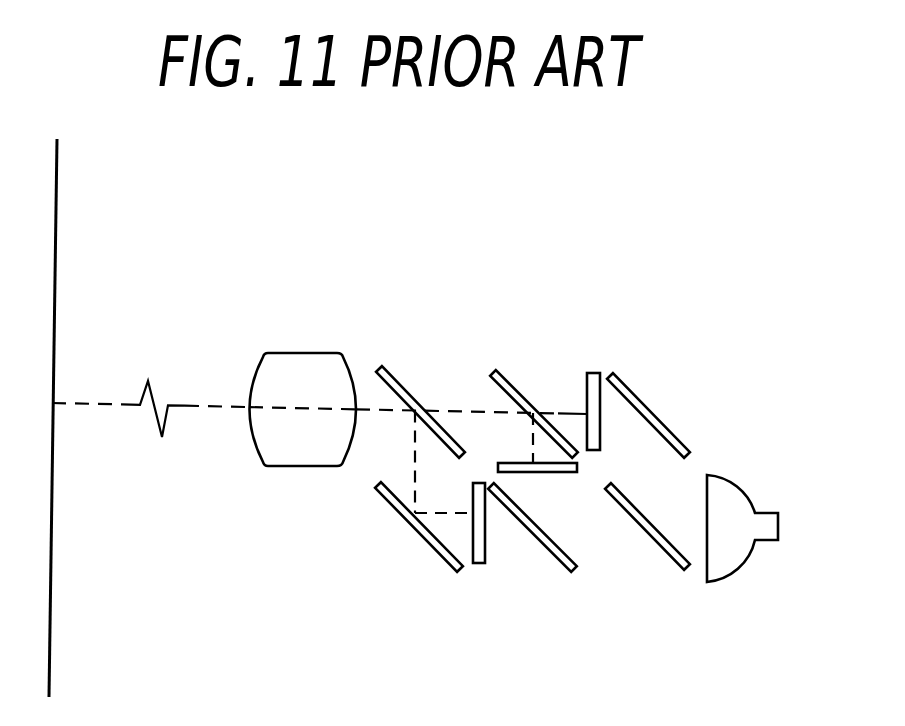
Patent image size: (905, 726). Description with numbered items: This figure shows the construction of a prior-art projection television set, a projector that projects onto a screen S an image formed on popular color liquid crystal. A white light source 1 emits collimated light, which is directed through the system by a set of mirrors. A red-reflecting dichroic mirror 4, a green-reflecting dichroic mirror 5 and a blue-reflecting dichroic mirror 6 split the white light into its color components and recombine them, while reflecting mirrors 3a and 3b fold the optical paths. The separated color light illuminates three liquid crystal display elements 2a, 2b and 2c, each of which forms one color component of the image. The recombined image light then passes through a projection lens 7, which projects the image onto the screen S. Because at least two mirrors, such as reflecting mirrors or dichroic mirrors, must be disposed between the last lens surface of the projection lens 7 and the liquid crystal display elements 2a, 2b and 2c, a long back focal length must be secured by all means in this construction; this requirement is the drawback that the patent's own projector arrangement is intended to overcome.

The screen S is at (50, 633).
The projection lens 7 is at (316, 354).
The blue-reflecting dichroic mirror 6 is at (390, 370).
The green-reflecting dichroic mirror 5 is at (507, 370).
The liquid crystal display element 2a is at (588, 373).
The reflecting mirror 3a is at (631, 388).
The liquid crystal display element 2b is at (503, 462).
The reflecting mirror 3b is at (413, 528).
The liquid crystal display element 2c is at (478, 563).
The red-reflecting dichroic mirror 4 is at (667, 555).
The white light source 1 is at (740, 491).